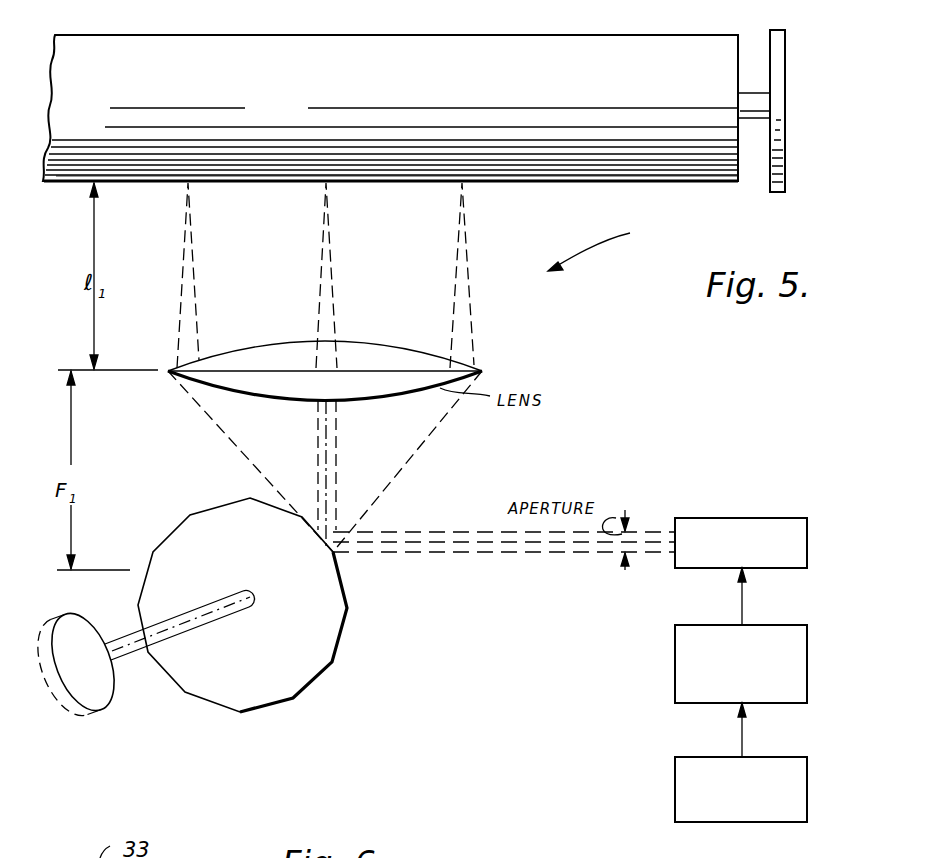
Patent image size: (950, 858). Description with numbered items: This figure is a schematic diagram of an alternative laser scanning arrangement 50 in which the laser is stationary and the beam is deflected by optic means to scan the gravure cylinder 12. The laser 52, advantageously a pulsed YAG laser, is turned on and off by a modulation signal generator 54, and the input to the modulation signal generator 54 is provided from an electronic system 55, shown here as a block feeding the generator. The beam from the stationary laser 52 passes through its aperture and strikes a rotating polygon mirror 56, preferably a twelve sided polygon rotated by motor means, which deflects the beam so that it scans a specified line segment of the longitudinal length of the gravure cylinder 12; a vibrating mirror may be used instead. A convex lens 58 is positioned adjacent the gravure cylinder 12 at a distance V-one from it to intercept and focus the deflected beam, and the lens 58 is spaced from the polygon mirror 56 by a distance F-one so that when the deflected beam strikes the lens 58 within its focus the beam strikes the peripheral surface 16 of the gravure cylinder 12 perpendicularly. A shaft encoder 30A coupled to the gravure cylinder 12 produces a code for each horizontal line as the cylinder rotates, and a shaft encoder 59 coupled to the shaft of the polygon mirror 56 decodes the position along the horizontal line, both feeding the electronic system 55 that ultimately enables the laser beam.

The gravure cylinder 12 is at (566, 28).
The shaft encoder 30A is at (787, 58).
The drum surface 16 is at (493, 186).
The laser scanning arrangement 50 is at (608, 246).
The convex lens 58 is at (378, 343).
The laser 52 is at (785, 518).
The modulation signal generator 54 is at (795, 625).
The electronic system 55 is at (795, 757).
The rotating polygon mirror 56 is at (312, 688).
The shaft encoder 59 is at (47, 692).